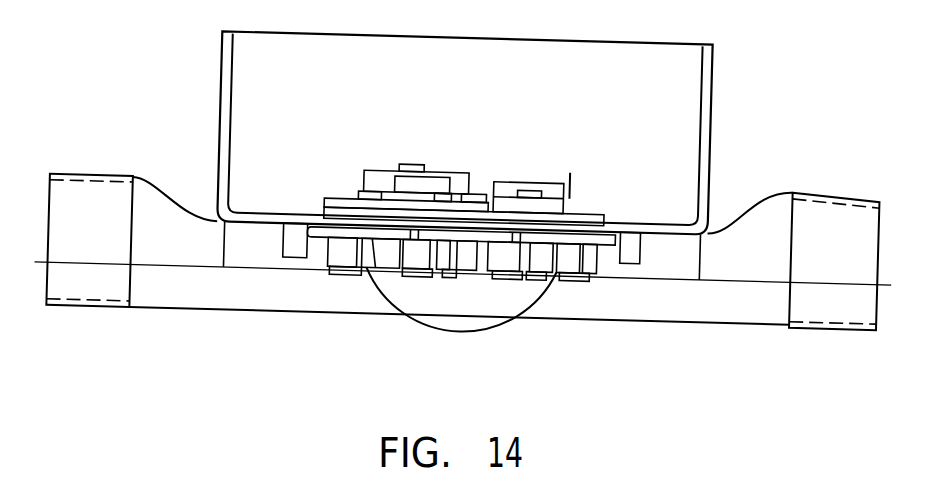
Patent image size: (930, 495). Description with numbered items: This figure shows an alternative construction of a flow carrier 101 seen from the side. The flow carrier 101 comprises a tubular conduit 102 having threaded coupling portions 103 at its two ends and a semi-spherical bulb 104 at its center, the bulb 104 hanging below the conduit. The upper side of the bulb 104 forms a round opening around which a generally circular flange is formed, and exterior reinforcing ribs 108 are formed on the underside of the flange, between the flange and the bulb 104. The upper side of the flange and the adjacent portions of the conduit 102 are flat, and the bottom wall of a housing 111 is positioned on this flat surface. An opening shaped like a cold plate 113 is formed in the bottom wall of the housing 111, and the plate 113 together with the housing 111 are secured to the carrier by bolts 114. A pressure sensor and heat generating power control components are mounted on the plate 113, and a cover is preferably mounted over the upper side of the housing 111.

The flow carrier 101 is at (705, 334).
The tubular conduit 102 is at (248, 306).
The threaded coupling portions 103 is at (825, 320).
The semi-spherical bulb 104 is at (479, 318).
The exterior reinforcing ribs 108 is at (476, 278).
The housing 111 is at (708, 152).
The cold plate 113 is at (592, 208).
The bolts 114 is at (356, 196).